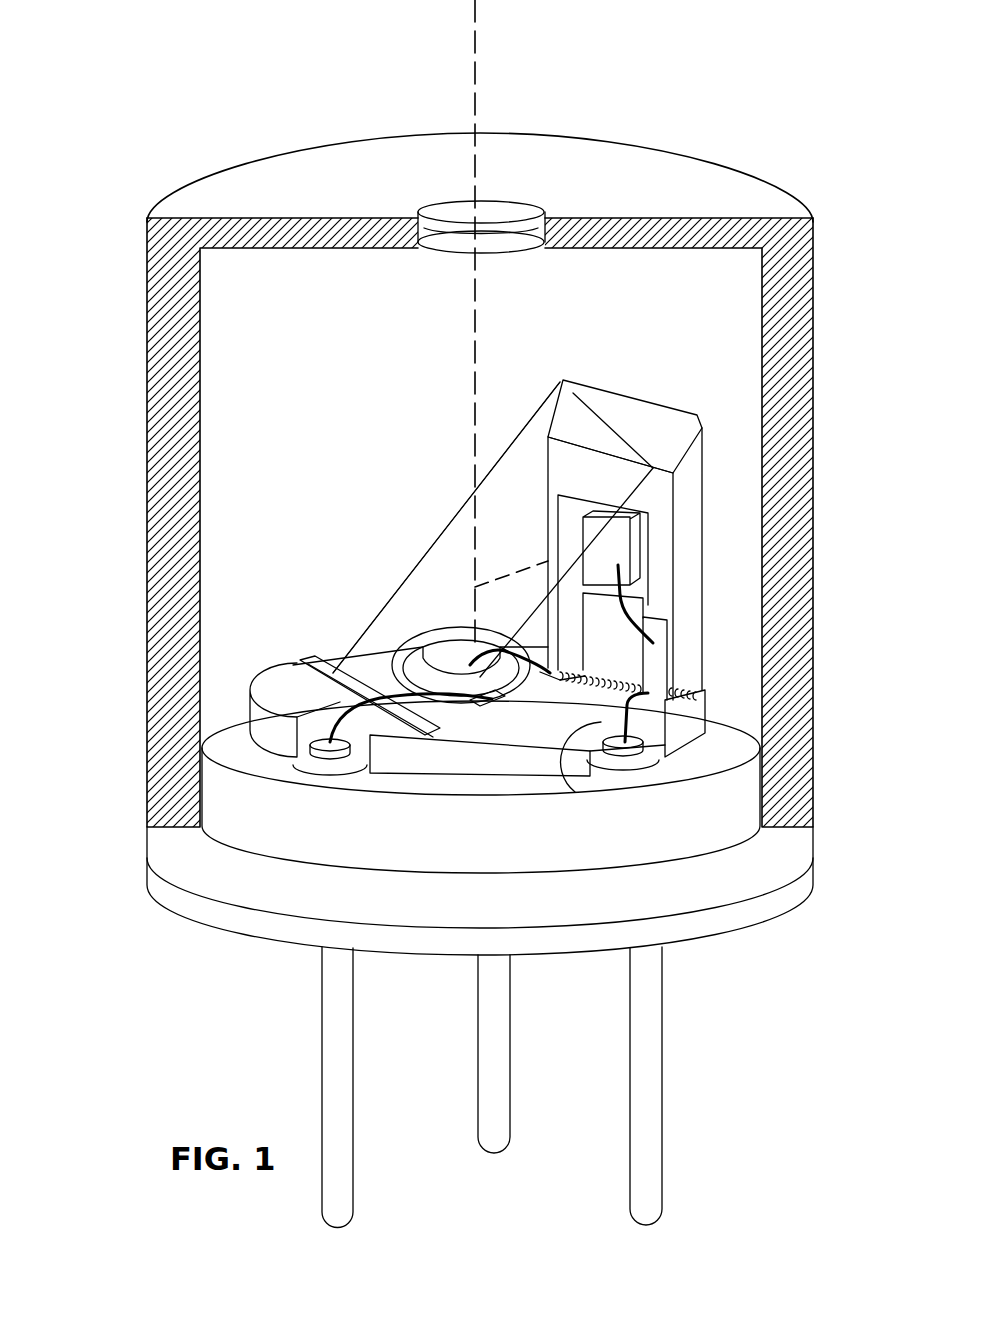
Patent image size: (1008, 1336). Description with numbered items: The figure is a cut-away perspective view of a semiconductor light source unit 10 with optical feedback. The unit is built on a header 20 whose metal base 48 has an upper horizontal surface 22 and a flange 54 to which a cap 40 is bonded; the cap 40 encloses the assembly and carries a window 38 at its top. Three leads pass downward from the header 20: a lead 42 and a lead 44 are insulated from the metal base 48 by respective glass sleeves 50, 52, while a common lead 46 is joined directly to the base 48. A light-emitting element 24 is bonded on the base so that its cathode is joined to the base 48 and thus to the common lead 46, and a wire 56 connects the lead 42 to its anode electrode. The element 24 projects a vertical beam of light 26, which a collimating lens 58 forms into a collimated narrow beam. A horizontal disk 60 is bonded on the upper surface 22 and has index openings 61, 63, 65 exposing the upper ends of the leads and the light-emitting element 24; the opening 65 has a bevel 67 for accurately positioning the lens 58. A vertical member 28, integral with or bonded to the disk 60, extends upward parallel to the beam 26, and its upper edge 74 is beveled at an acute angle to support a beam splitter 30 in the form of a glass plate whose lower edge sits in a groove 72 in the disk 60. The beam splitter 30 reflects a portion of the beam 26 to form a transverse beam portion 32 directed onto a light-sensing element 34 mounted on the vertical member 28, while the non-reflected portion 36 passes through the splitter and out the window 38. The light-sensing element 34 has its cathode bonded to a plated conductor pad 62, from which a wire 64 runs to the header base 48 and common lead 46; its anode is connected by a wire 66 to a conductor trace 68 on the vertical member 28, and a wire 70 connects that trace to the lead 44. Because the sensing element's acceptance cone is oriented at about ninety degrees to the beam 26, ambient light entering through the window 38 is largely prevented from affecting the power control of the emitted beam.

The semiconductor light source unit 10 is at (165, 90).
The header 20 is at (178, 1063).
The upper horizontal surface 22 is at (228, 727).
The light-emitting element 24 is at (522, 692).
The beam of light 26 is at (467, 616).
The vertical member 28 is at (698, 483).
The beam splitter 30 is at (522, 448).
The beam portion 32 is at (530, 568).
The light-sensing element 34 is at (622, 540).
The non-reflected portion of the beam 36 is at (470, 364).
The window 38 is at (510, 213).
The cap 40 is at (160, 290).
The lead 42 is at (336, 1035).
The lead 44 is at (640, 1080).
The common lead 46 is at (491, 1035).
The metal base 48 is at (738, 787).
The glass sleeve 50 is at (318, 767).
The glass sleeve 52 is at (613, 760).
The flange 54 is at (800, 865).
The wire 56 is at (317, 716).
The collimating lens 58 is at (428, 635).
The horizontal disk 60 is at (496, 764).
The index opening 61 is at (322, 720).
The plated conductor pad 62 is at (573, 520).
The index opening 63 is at (600, 722).
The wire 64 is at (496, 655).
The opening 65 is at (494, 724).
The wire 66 is at (640, 612).
The bevel 67 is at (388, 650).
The conductor trace 68 is at (657, 670).
The wire 70 is at (665, 734).
The groove 72 is at (318, 667).
The upper edge 74 is at (652, 435).